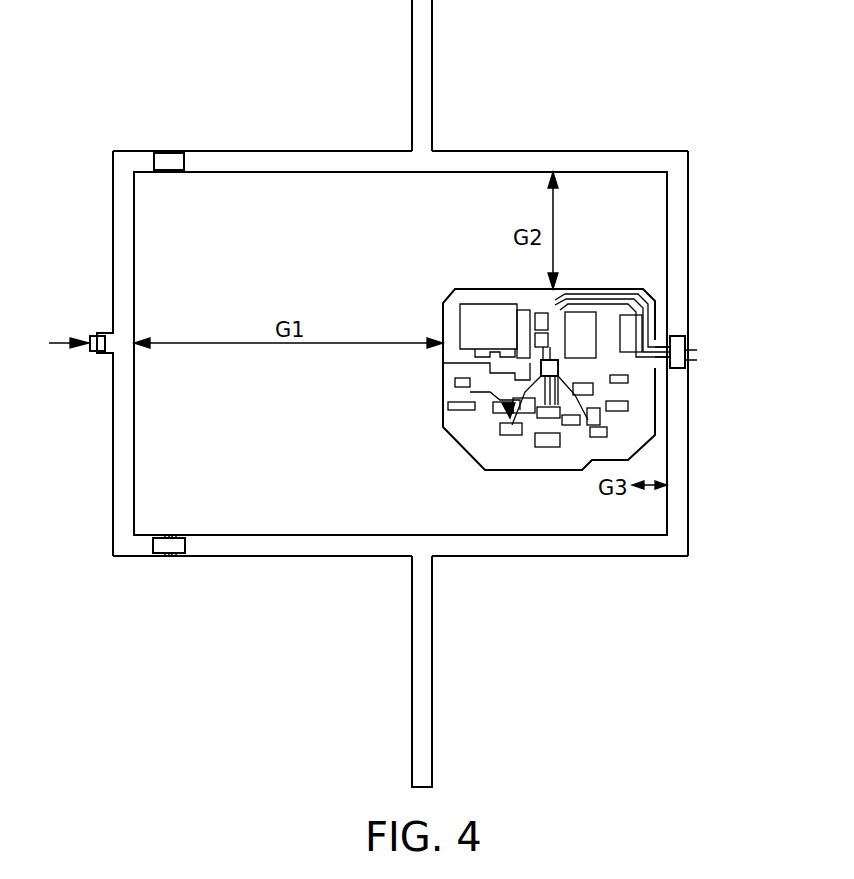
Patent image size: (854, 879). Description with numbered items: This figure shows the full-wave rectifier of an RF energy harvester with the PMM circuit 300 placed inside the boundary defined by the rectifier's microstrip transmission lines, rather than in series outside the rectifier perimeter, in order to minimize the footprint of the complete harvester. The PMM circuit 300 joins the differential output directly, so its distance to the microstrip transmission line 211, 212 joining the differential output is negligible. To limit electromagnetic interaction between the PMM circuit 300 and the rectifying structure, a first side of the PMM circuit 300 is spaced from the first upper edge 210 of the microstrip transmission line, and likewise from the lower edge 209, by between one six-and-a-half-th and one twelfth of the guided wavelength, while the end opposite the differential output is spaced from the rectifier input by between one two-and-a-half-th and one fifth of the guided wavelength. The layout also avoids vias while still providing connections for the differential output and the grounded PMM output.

The bottom wall of enclosure 209 is at (572, 556).
The first upper edge 210 is at (580, 151).
The microstrip transmission line 211 is at (688, 272).
The microstrip transmission line 212 is at (688, 472).
The PMM circuit 300 is at (657, 393).